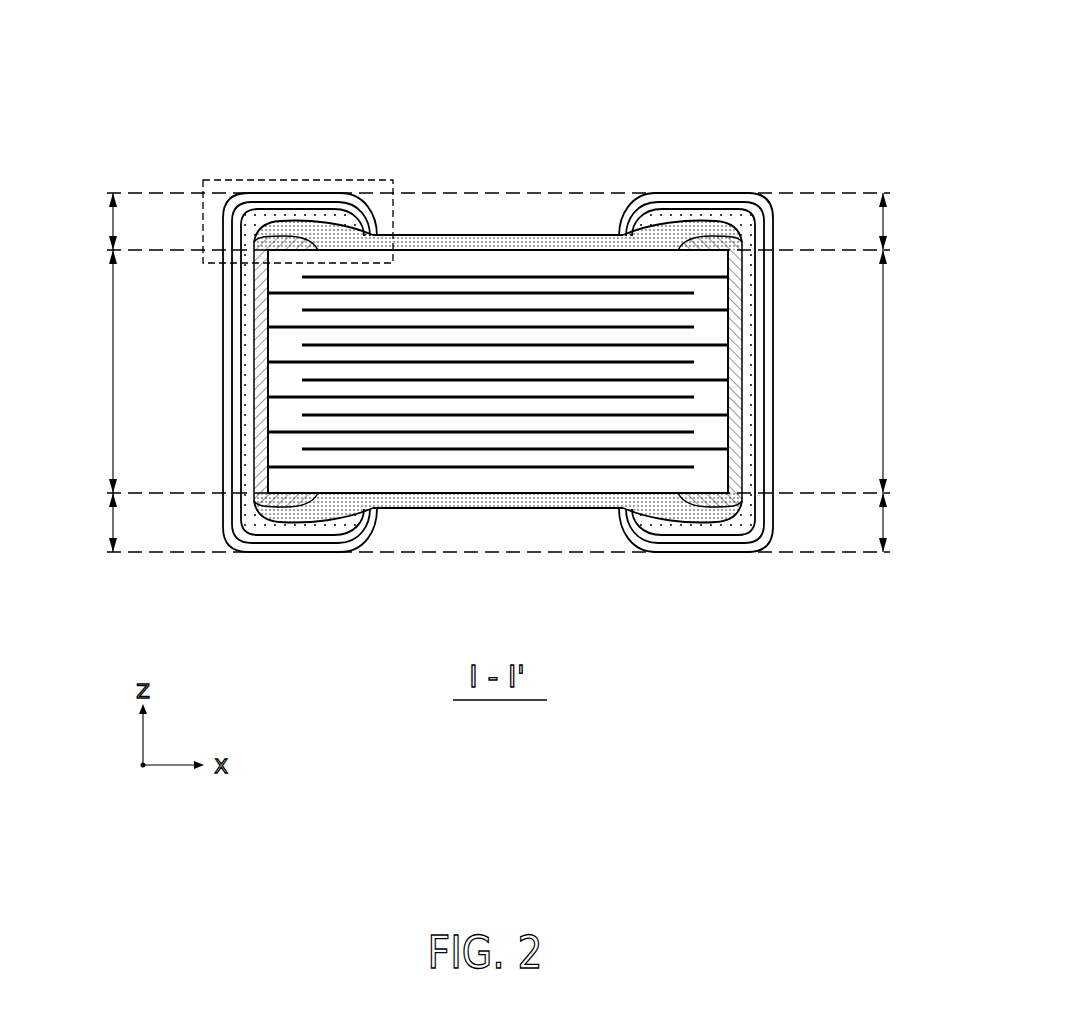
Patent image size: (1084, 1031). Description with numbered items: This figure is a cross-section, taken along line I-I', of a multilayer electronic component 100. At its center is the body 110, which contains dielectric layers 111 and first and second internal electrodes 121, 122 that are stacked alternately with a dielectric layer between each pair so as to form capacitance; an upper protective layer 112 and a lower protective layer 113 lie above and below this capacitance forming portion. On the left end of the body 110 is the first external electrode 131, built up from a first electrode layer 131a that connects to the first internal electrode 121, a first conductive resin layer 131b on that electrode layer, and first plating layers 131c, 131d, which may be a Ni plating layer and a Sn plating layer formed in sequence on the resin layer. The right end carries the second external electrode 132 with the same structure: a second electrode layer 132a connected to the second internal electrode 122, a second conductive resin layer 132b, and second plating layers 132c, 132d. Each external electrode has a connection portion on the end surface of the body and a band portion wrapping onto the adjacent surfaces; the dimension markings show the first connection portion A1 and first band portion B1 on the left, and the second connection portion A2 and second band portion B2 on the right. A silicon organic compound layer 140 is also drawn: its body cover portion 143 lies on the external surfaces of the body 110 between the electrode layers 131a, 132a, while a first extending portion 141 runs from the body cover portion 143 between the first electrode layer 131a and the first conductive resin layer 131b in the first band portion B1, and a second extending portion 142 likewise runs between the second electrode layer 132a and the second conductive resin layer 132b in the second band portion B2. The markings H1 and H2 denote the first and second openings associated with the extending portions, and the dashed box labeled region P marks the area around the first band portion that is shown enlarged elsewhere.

The multilayer electronic component 100 is at (215, 42).
The body 110 is at (498, 342).
The dielectric layer 111 is at (498, 291).
The upper protective layer 112 is at (581, 263).
The lower protective layer 113 is at (494, 483).
The first internal electrode 121 is at (375, 290).
The second internal electrode 122 is at (400, 278).
The first external electrode 131 is at (240, 427).
The first electrode layer 131a is at (250, 540).
The first conductive resin layer 131b is at (268, 538).
The first plating layer 131c is at (290, 545).
The first plating layer 131d is at (300, 402).
The second external electrode 132 is at (757, 427).
The second electrode layer 132a is at (735, 430).
The second conductive resin layer 132b is at (760, 535).
The second plating layer 132c is at (726, 544).
The second plating layer 132d is at (696, 402).
The silicon organic compound layer 140 is at (577, 272).
The first extending portion 141 is at (296, 228).
The second extending portion 142 is at (698, 225).
The body cover portion 143 is at (540, 240).
The region P is at (256, 180).
The first opening H1 is at (257, 353).
The second opening H2 is at (757, 372).
The first connection portion A1 is at (84, 383).
The second connection portion A2 is at (910, 383).
The first band portion B1 is at (86, 371).
The second band portion B2 is at (912, 371).